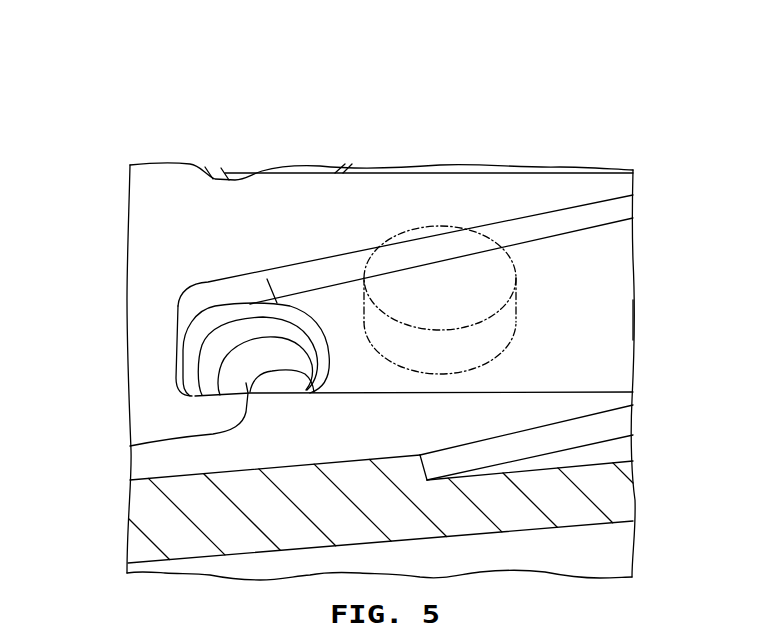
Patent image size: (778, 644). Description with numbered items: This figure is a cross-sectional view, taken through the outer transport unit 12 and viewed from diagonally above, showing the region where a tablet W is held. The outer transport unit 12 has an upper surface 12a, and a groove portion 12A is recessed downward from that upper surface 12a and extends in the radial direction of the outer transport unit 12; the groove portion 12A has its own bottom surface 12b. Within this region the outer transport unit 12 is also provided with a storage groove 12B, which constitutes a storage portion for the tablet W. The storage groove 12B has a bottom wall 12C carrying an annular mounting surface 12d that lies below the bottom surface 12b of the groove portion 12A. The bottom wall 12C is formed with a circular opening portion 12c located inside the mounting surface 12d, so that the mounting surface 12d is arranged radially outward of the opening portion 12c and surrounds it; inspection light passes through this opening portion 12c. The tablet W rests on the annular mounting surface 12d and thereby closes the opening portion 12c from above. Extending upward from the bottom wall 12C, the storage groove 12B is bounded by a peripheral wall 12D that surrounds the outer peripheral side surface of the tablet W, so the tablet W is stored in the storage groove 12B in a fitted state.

The outer transport unit 12 is at (164, 170).
The upper surface 12a is at (173, 237).
The groove portion 12A is at (556, 287).
The bottom surface 12b is at (560, 328).
The storage groove 12B is at (204, 334).
The bottom wall 12C is at (243, 371).
The opening portion 12c is at (292, 363).
The peripheral wall 12D is at (246, 320).
The mounting surface 12d is at (313, 351).
The tablet W is at (425, 226).